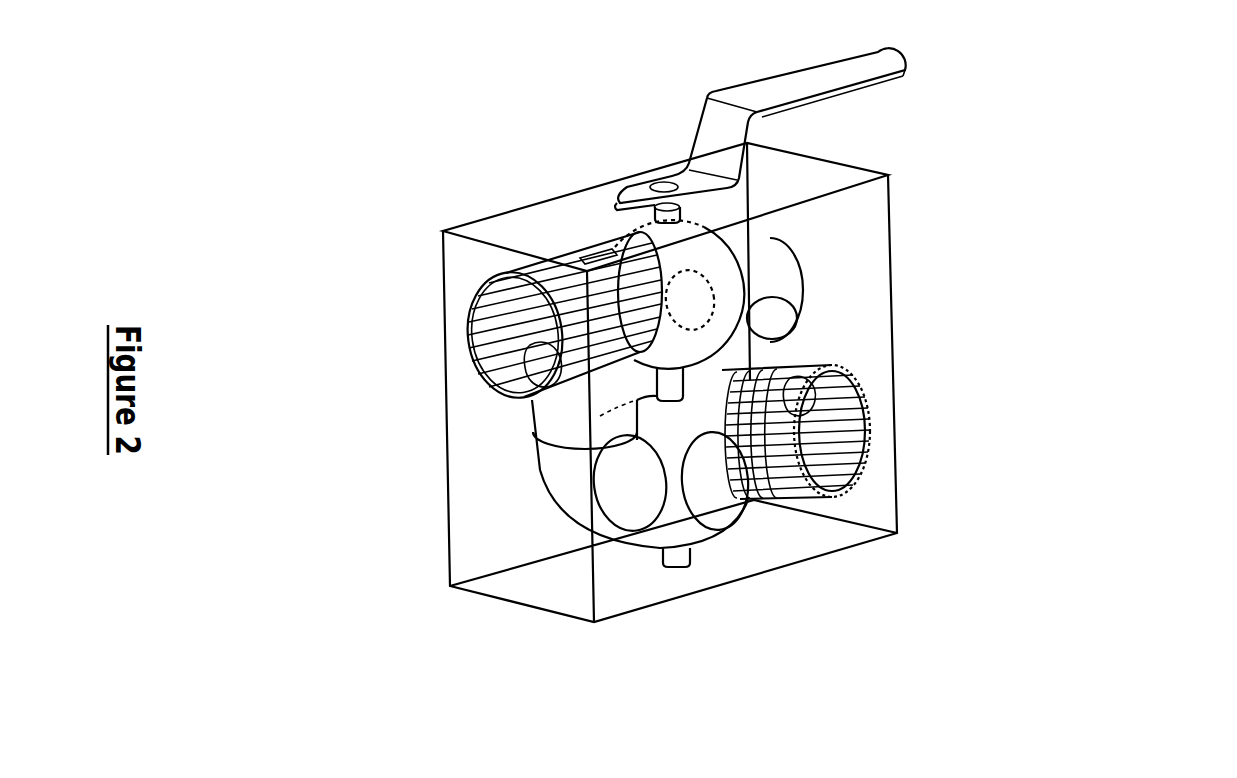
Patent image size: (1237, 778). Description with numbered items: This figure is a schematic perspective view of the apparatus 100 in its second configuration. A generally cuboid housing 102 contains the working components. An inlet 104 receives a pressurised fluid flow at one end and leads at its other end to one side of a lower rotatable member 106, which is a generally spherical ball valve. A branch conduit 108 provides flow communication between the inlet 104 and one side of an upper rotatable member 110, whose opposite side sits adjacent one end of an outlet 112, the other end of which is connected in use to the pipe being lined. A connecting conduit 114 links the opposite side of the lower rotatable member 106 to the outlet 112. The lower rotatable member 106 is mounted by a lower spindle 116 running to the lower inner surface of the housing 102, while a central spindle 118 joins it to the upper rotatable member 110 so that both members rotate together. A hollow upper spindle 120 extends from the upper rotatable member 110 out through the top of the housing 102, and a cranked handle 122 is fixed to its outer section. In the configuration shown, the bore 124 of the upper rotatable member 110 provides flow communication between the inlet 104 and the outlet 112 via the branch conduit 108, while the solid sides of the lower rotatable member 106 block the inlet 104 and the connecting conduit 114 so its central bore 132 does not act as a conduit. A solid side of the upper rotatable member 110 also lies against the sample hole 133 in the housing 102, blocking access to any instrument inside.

The apparatus 100 is at (450, 290).
The housing 102 is at (872, 395).
The inlet 104 is at (855, 418).
The lower rotatable member 106 is at (687, 530).
The branch conduit 108 is at (757, 250).
The upper rotatable member 110 is at (705, 263).
The outlet 112 is at (513, 342).
The connecting conduit 114 is at (582, 488).
The lower spindle 116 is at (682, 560).
The central spindle 118 is at (677, 383).
The upper spindle 120 is at (630, 200).
The cranked handle 122 is at (773, 92).
The bore 124 is at (690, 302).
The central bore 132 is at (727, 490).
The sample hole 133 is at (713, 290).